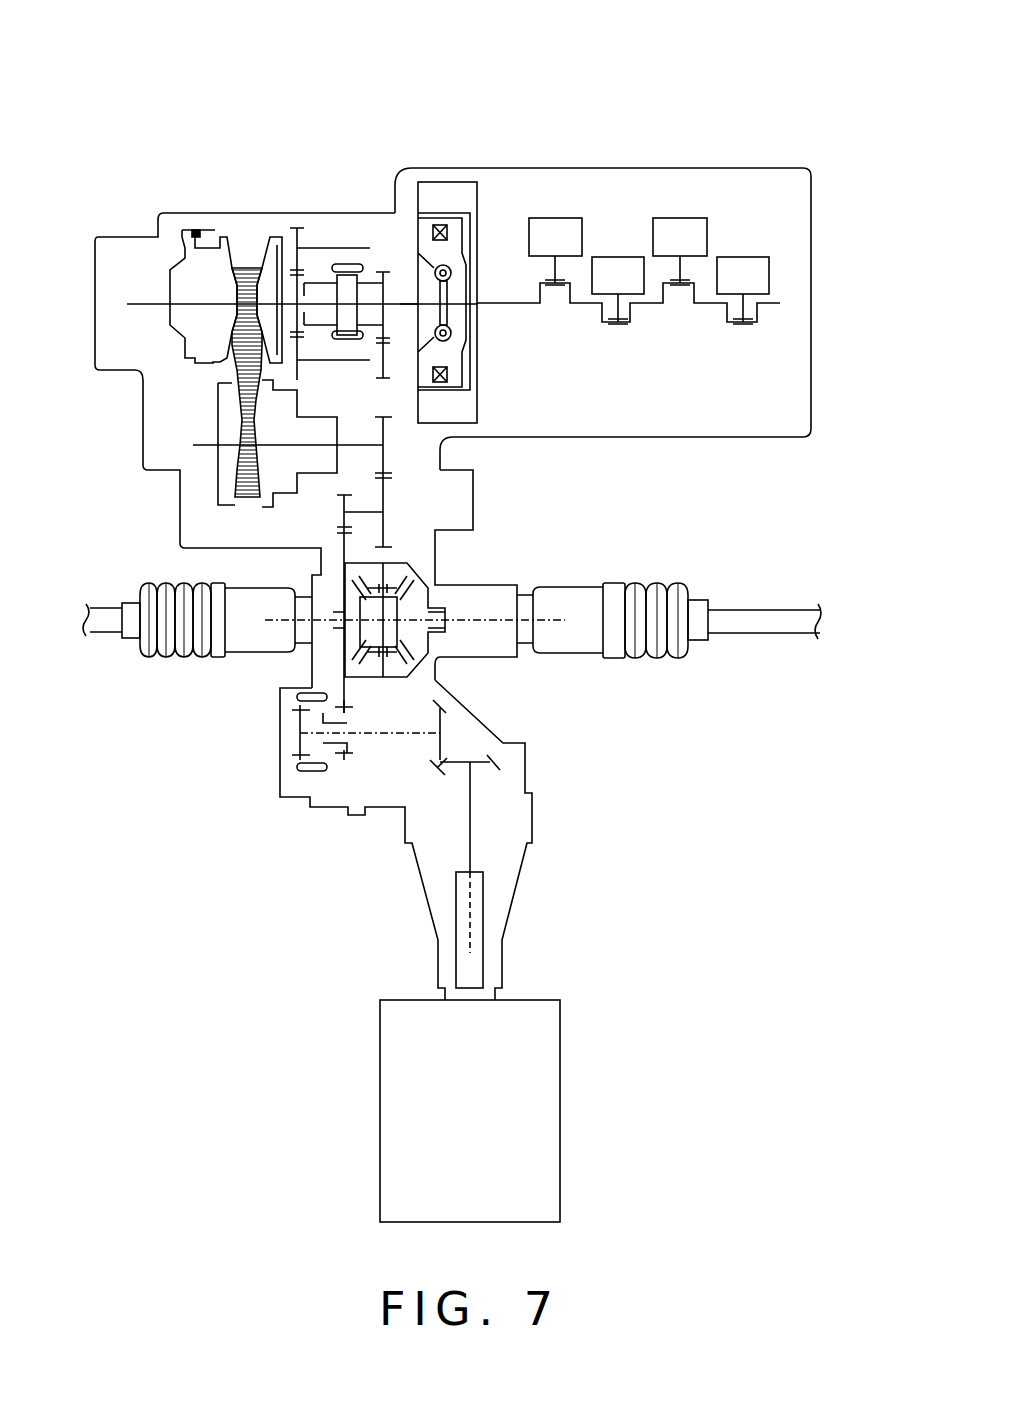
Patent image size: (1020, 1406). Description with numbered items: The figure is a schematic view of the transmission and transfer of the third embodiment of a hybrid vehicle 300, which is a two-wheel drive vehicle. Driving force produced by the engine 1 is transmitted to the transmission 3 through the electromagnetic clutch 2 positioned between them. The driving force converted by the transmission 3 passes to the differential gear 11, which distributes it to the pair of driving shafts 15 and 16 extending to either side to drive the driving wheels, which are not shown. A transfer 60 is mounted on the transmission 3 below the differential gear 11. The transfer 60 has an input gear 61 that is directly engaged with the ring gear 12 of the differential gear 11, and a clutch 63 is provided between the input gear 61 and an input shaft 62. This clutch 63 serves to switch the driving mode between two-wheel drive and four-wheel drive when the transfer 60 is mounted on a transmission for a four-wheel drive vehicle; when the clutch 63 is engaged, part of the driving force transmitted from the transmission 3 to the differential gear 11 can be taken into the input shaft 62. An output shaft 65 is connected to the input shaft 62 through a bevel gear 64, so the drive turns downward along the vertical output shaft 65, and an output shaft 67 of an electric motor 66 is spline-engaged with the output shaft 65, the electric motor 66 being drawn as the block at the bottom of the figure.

The hybrid vehicle 300 is at (803, 91).
The engine 1 is at (708, 164).
The electromagnetic clutch 2 is at (447, 171).
The transmission 3 is at (164, 206).
The differential gear 11 is at (439, 562).
The ring gear 12 is at (343, 550).
The driving shaft 15 is at (103, 639).
The driving shaft 16 is at (773, 624).
The transfer 60 is at (535, 775).
The input gear 61 is at (346, 755).
The input shaft 62 is at (383, 736).
The clutch 63 is at (292, 779).
The bevel gear 64 is at (465, 729).
The output shaft 65 is at (470, 832).
The electric motor 66 is at (545, 1088).
The output shaft 67 is at (483, 912).